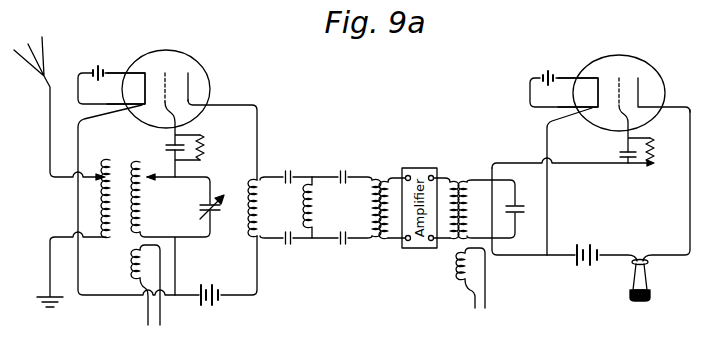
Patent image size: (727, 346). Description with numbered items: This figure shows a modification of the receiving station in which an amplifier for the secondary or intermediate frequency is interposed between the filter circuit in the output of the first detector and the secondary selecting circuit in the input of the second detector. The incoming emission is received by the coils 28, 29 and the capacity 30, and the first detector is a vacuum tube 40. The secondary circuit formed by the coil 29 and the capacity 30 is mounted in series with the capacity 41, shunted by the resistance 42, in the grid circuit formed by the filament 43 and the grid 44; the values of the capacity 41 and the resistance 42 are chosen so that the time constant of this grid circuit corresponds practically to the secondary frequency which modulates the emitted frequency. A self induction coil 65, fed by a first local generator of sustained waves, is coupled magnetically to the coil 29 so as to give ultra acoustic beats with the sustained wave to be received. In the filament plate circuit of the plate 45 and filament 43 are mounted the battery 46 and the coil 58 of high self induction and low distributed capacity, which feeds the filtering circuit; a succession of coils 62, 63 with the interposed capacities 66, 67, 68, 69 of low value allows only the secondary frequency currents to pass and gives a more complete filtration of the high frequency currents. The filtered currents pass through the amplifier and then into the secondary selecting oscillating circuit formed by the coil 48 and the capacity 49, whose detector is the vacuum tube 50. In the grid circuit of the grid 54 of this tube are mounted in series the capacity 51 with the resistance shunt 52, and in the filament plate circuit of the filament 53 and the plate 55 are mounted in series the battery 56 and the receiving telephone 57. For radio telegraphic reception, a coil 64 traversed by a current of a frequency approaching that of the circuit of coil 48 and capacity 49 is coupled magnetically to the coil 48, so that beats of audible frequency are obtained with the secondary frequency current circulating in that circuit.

The coil 28 is at (96, 198).
The coil 29 is at (151, 196).
The capacity 30 is at (219, 217).
The vacuum tube 40 is at (201, 67).
The capacity 41 is at (165, 151).
The resistance 42 is at (213, 148).
The filament 43 is at (129, 82).
The grid 44 is at (165, 81).
The plate 45 is at (187, 80).
The battery 46 is at (212, 307).
The coil 48 is at (486, 209).
The capacity 49 is at (523, 202).
The vacuum tube 50 is at (664, 58).
The capacity 51 is at (618, 152).
The resistance shunt 52 is at (663, 150).
The filament 53 is at (582, 85).
The grid 54 is at (619, 84).
The plate 55 is at (660, 87).
The battery 56 is at (589, 265).
The receiving telephone 57 is at (651, 281).
The coil 58 is at (227, 203).
The coil 62 is at (299, 207).
The coil 63 is at (361, 207).
The coil 64 is at (461, 278).
The self induction coil 65 is at (135, 285).
The capacity 66 is at (290, 167).
The capacity 67 is at (290, 249).
The capacity 68 is at (345, 167).
The capacity 69 is at (345, 249).